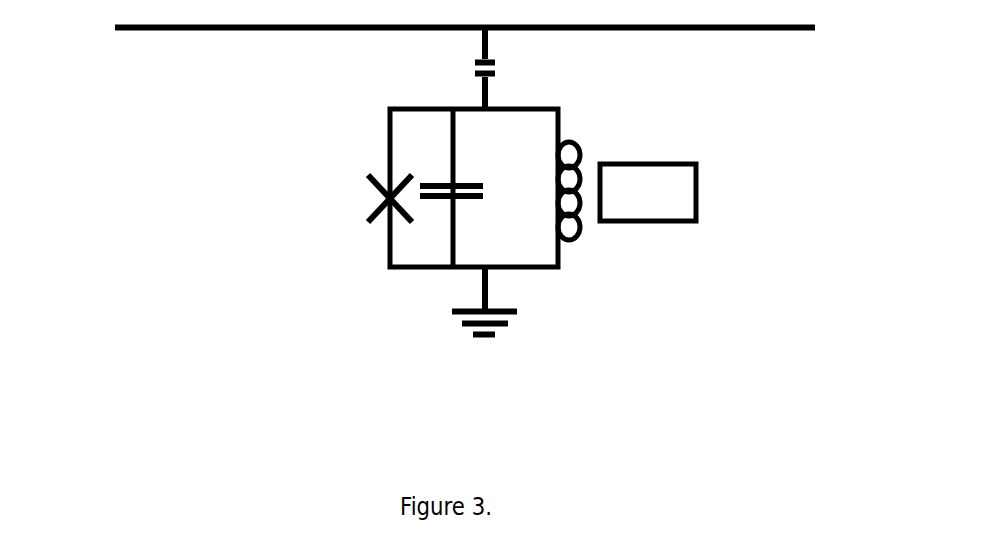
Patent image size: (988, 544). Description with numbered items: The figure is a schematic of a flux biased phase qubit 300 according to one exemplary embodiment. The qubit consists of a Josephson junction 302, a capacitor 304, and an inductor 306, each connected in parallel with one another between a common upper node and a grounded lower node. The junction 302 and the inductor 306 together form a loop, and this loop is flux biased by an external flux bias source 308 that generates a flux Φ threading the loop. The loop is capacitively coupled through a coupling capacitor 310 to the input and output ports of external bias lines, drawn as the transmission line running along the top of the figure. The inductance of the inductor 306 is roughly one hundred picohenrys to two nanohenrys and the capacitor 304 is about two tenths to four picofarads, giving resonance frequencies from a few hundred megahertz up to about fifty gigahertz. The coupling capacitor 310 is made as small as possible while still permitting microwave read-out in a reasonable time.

The tunable resonator circuit 300 is at (647, 450).
The Josephson junction 302 is at (363, 205).
The capacitor 304 is at (433, 218).
The inductor 306 is at (592, 242).
The external flux bias source 308 is at (648, 192).
The coupling capacitor 310 is at (457, 72).